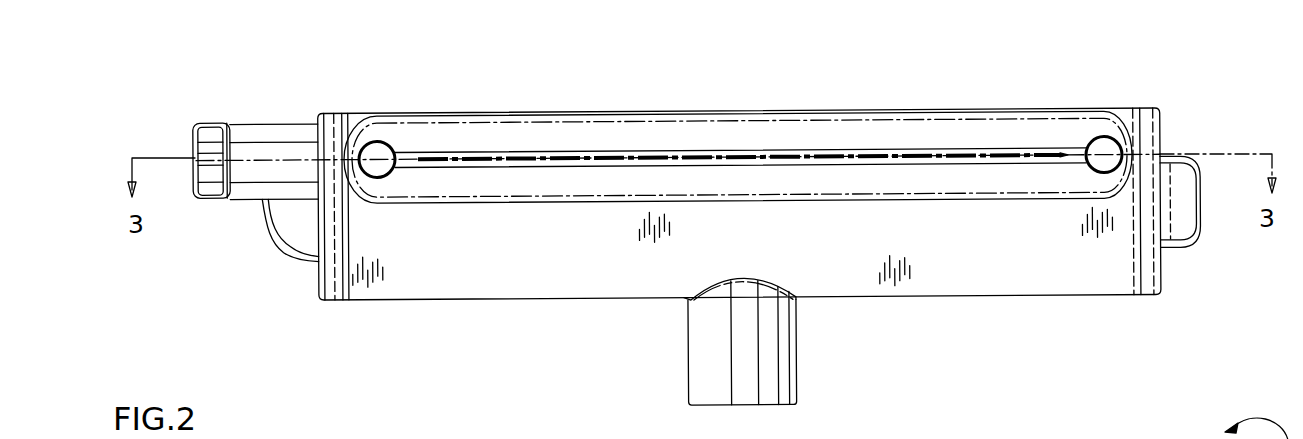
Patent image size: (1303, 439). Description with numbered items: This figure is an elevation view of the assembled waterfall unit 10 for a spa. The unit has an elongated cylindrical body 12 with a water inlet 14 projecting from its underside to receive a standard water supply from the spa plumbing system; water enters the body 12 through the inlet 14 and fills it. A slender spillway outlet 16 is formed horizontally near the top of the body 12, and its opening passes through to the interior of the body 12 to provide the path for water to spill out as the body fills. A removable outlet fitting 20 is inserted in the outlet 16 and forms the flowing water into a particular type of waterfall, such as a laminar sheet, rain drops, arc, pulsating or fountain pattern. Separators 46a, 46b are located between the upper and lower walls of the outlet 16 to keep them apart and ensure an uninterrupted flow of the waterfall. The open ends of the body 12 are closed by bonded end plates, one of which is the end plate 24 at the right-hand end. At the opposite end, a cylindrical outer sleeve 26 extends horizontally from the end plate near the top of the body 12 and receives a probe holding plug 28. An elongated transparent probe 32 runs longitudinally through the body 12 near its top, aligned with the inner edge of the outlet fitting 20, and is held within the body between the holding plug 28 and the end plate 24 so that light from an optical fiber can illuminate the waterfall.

The waterfall unit 10 is at (1117, 32).
The elongated cylindrical body 12 is at (978, 265).
The water inlet 14 is at (797, 372).
The spillway outlet 16 is at (550, 121).
The outlet fitting 20 is at (620, 182).
The end plate 24 is at (1158, 272).
The cylindrical outer sleeve 26 is at (247, 199).
The probe holding plug 28 is at (212, 123).
The transparent probe 32 is at (1128, 428).
The separator 46a is at (377, 160).
The separator 46b is at (1104, 158).